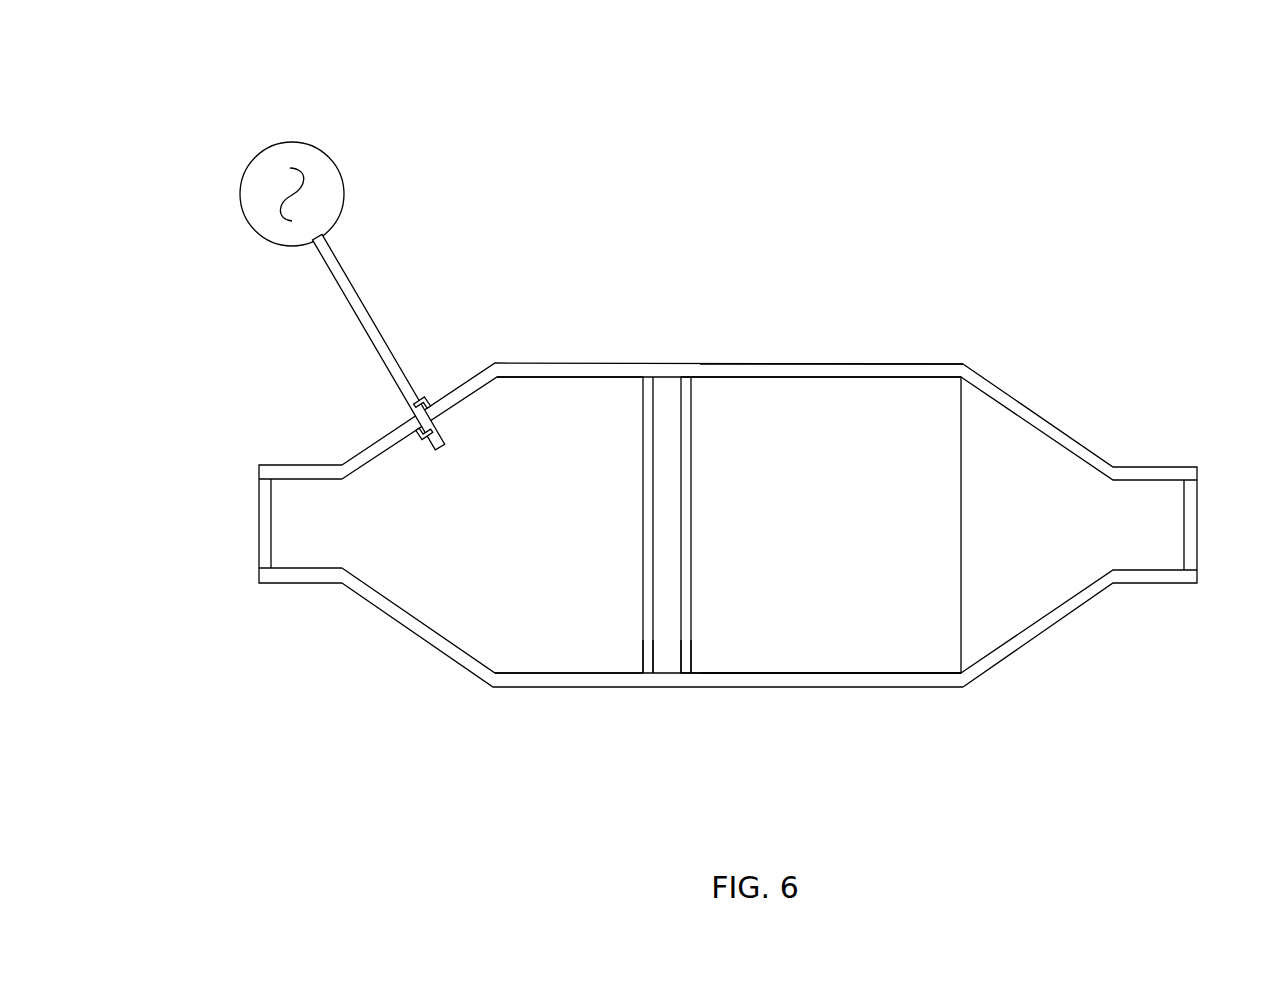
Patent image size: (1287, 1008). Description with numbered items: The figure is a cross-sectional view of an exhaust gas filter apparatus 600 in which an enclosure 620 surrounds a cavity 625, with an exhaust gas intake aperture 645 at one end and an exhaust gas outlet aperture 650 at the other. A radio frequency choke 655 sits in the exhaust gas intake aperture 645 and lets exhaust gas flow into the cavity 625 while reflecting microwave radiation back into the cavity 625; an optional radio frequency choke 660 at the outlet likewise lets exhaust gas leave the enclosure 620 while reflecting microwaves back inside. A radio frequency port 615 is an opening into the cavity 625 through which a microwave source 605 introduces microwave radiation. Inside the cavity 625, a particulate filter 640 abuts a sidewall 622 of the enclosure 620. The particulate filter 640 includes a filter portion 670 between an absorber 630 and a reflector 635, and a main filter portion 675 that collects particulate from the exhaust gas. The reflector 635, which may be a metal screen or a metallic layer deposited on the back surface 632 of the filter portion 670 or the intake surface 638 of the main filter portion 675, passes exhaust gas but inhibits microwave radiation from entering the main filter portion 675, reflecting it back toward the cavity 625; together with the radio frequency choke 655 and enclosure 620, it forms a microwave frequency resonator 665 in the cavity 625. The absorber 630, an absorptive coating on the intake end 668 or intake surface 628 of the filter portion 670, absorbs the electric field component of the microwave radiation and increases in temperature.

The exhaust gas filter apparatus 600 is at (258, 92).
The microwave source 605 is at (328, 156).
The radio frequency port 615 is at (431, 366).
The enclosure 620 is at (498, 362).
The sidewall 622 is at (845, 373).
The cavity 625 is at (583, 414).
The intake surface 628 is at (645, 390).
The absorber 630 is at (652, 392).
The back surface 632 is at (681, 392).
The reflector 635 is at (685, 392).
The intake surface 638 is at (691, 392).
The particulate filter 640 is at (767, 376).
The exhaust gas intake aperture 645 is at (228, 522).
The exhaust gas outlet aperture 650 is at (1232, 523).
The radio frequency choke 655 is at (268, 543).
The radio frequency choke 660 is at (1192, 543).
The microwave frequency resonator 665 is at (489, 744).
The intake end 668 is at (651, 660).
The filter portion 670 is at (670, 660).
The main filter portion 675 is at (807, 655).